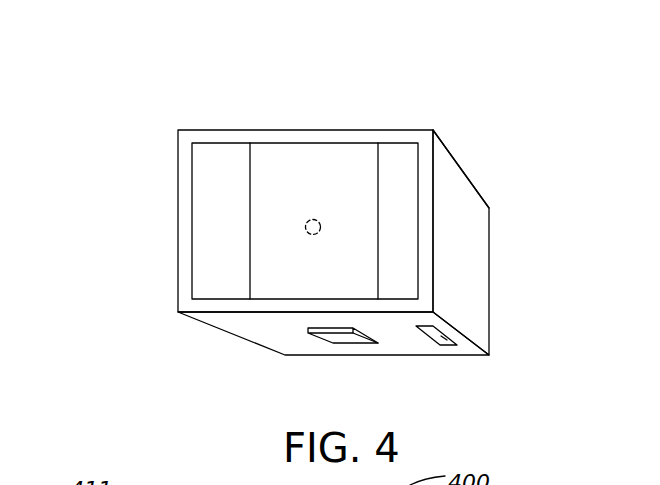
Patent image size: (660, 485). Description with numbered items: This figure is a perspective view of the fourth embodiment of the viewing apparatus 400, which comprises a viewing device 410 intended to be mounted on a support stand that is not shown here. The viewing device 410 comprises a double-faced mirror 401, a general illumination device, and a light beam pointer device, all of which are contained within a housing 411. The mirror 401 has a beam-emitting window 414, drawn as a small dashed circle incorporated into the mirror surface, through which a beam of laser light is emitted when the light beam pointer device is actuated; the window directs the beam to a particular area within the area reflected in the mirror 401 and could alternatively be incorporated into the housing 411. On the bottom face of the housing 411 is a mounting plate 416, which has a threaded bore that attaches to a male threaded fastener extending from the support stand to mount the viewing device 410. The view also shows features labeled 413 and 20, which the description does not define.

The viewing apparatus 400 is at (226, 99).
The double-faced mirror 401 is at (325, 165).
The viewing device 410 is at (472, 233).
The housing 411 is at (448, 167).
The left panel section 413 is at (227, 181).
The beam-emitting window 414 is at (305, 228).
The mounting plate 416 is at (353, 339).
The connector slot 20 is at (446, 341).